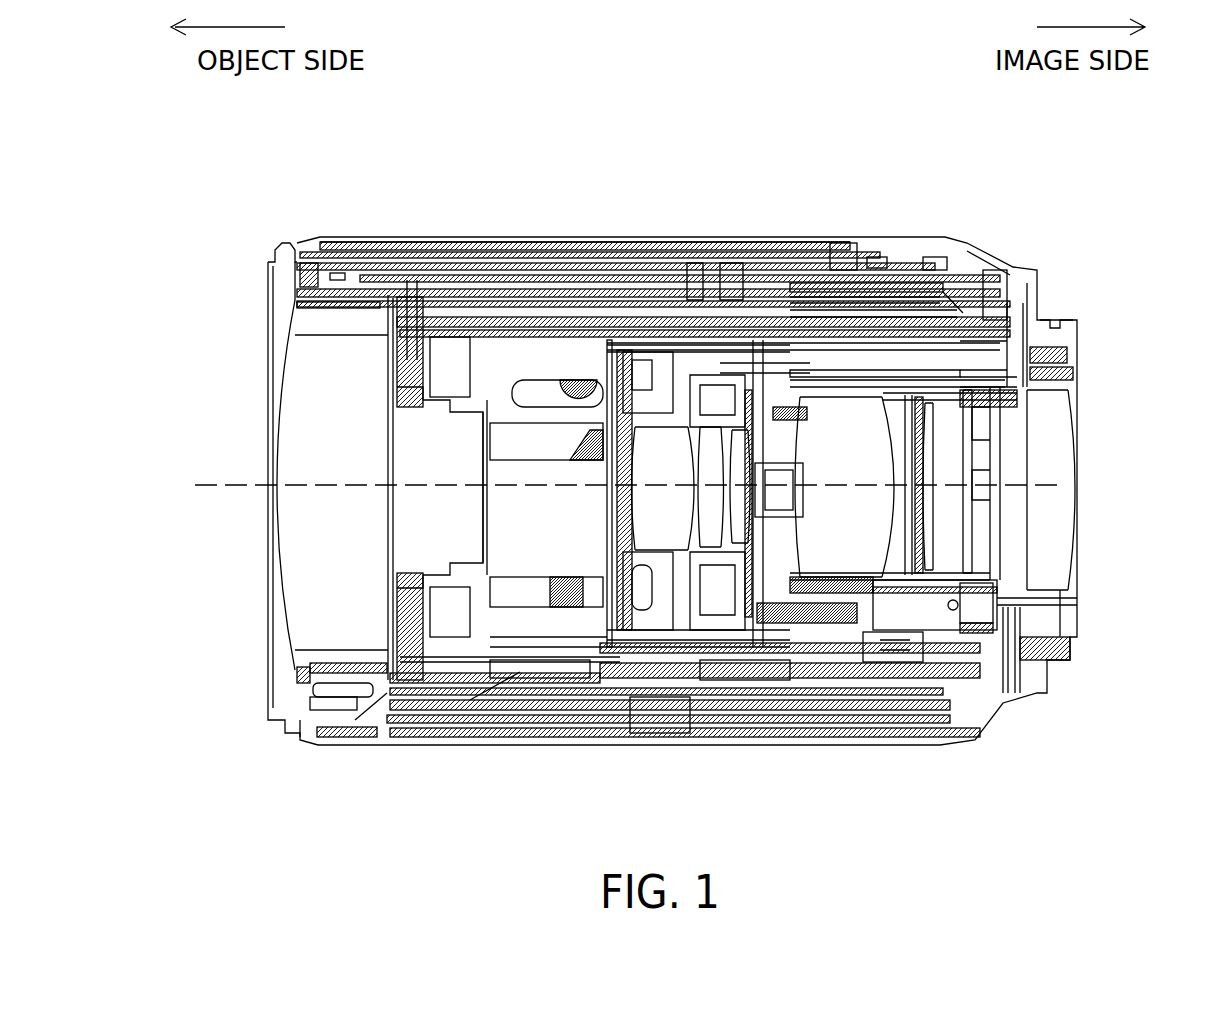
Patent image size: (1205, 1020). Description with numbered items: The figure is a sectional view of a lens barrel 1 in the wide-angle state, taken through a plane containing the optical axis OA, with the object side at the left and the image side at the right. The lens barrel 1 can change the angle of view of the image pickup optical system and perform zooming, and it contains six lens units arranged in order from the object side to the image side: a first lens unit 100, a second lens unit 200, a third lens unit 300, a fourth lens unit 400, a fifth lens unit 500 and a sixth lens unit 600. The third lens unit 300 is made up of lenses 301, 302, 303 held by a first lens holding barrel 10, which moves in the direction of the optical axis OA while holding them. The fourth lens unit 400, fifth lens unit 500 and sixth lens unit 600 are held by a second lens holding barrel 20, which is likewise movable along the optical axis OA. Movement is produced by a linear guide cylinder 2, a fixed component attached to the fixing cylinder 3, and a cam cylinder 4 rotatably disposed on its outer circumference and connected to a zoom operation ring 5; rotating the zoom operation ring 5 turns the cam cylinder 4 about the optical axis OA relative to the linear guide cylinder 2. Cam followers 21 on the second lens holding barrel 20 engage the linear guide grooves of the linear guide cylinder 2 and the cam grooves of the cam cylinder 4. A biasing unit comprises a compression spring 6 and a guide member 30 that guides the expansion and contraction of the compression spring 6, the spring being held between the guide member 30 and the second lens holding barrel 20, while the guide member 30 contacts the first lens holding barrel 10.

The lens barrel 1 is at (1202, 156).
The linear guide cylinder 2 is at (490, 318).
The fixing cylinder 3 is at (927, 278).
The cam cylinder 4 is at (537, 305).
The zoom operation ring 5 is at (583, 250).
The compression spring 6 is at (813, 600).
The first lens holding barrel 10 is at (662, 635).
The second lens holding barrel 20 is at (900, 632).
The cam followers 21 is at (875, 632).
The guide member 30 is at (760, 620).
The first lens unit 100 is at (350, 355).
The second lens unit 200 is at (458, 448).
The third lens unit 300 is at (627, 140).
The lens 301 is at (670, 467).
The lens 302 is at (710, 467).
The lens 303 is at (745, 472).
The fourth lens unit 400 is at (850, 432).
The fifth lens unit 500 is at (945, 432).
The sixth lens unit 600 is at (1057, 433).
The optical axis OA is at (226, 487).